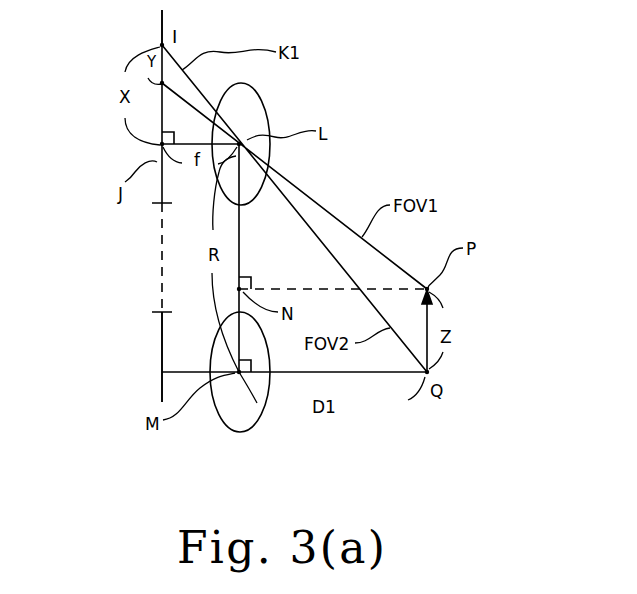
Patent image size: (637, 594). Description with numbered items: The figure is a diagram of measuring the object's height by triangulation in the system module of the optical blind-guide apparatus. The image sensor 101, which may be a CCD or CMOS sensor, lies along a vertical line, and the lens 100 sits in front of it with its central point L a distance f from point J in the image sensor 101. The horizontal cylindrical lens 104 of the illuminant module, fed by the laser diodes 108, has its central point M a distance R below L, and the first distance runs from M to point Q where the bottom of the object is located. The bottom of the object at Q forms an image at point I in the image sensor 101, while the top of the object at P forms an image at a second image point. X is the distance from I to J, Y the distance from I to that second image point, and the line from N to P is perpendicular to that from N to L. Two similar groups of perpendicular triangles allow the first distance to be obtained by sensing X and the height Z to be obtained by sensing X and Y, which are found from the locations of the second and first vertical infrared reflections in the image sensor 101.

The lens 100 is at (268, 112).
The image sensor 101 is at (163, 25).
The horizontal cylindrical lens 104 is at (248, 432).
The laser diodes 108 is at (162, 352).